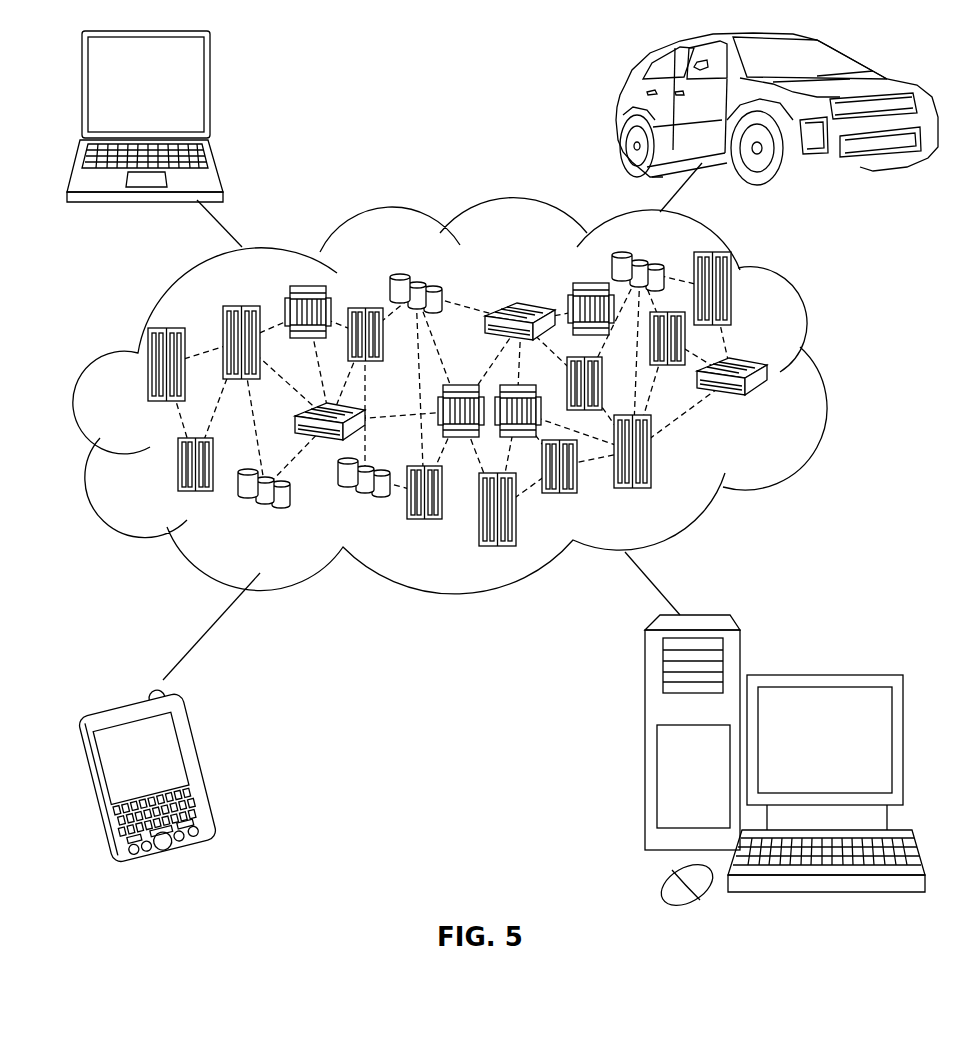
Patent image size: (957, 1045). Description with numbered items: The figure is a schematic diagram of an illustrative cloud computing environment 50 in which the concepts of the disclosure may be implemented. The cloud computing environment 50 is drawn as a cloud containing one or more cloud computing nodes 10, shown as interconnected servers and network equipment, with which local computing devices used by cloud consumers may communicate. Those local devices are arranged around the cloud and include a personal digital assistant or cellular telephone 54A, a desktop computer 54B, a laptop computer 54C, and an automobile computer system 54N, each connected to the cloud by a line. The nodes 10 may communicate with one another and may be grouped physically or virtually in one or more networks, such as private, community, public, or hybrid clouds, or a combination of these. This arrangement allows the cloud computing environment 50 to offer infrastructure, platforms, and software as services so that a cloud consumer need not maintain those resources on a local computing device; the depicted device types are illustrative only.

The cloud computing node 10 is at (778, 413).
The cloud computing environment 50 is at (477, 396).
The personal digital assistant or cellular telephone 54A is at (202, 770).
The desktop computer 54B is at (822, 675).
The laptop computer 54C is at (209, 92).
The automobile computer system 54N is at (618, 108).